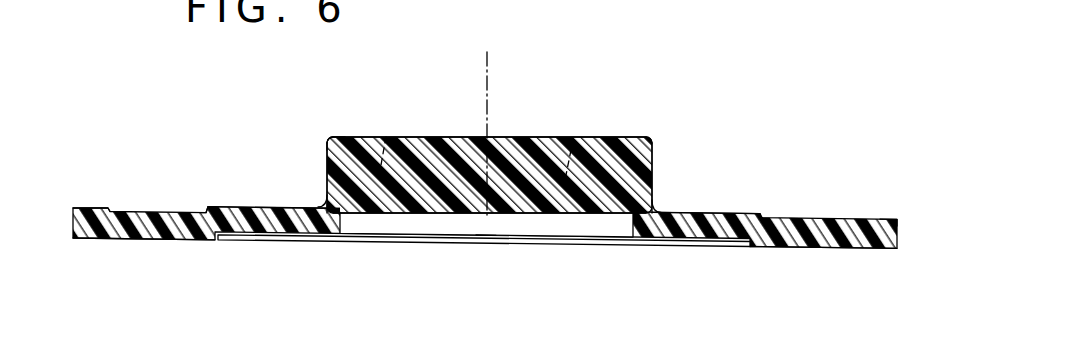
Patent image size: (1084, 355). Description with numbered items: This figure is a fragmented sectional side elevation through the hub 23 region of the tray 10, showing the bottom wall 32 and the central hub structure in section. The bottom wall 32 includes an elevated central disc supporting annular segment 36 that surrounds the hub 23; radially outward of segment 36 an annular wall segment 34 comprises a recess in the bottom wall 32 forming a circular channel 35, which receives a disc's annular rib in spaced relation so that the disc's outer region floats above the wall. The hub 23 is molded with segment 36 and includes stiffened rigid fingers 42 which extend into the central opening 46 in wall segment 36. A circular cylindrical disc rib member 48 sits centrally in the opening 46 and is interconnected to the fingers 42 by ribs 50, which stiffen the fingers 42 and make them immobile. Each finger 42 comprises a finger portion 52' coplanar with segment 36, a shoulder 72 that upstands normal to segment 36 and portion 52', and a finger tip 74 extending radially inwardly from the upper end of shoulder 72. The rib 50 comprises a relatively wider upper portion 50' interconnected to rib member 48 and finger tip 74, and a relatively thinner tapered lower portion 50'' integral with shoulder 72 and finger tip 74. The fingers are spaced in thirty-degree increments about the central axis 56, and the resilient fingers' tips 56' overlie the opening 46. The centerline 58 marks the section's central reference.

The tray 10 is at (245, 268).
The hub 23 is at (322, 110).
The bottom wall 32 is at (897, 245).
The annular wall segment 34 is at (125, 238).
The circular channel 35 is at (207, 207).
The central disc supporting annular segment 36 is at (228, 206).
The stiffened rigid finger 42 is at (328, 138).
The central opening 46 is at (710, 250).
The disc rib member 48 is at (495, 137).
The rib 50 is at (479, 273).
The upper portion of rib 50' is at (489, 105).
The tapered lower portion of rib 50'' is at (486, 253).
The finger portion 52' is at (484, 233).
The central axis 56 is at (489, 270).
The finger tip 56' is at (486, 115).
The centerline 58 is at (488, 70).
The shoulder 72 is at (326, 182).
The finger tip 74 is at (333, 137).